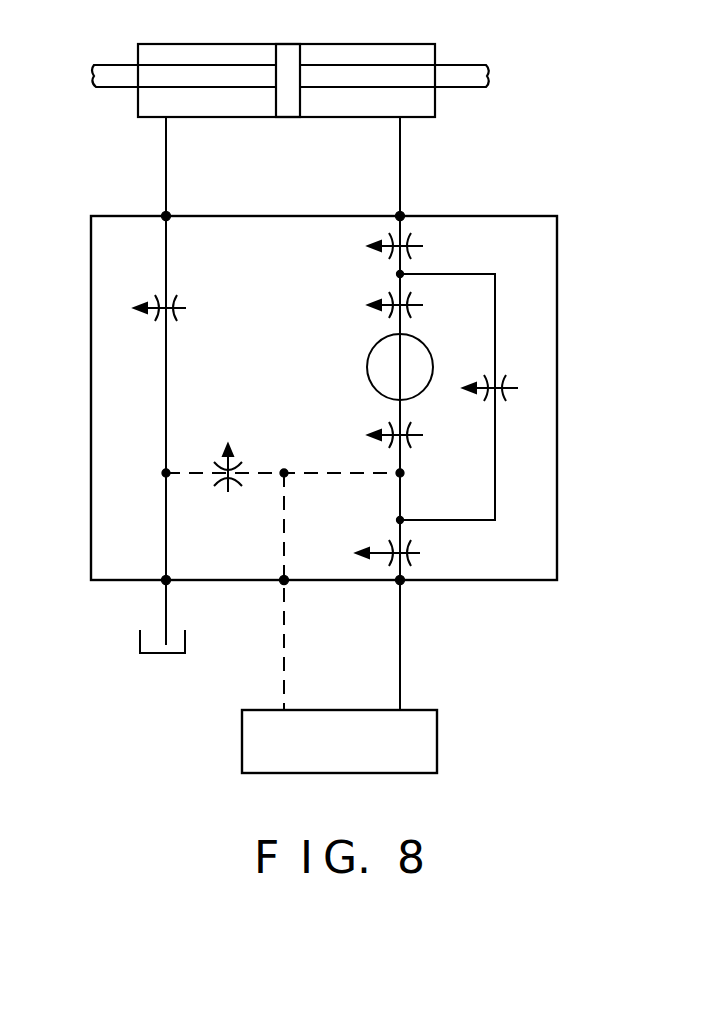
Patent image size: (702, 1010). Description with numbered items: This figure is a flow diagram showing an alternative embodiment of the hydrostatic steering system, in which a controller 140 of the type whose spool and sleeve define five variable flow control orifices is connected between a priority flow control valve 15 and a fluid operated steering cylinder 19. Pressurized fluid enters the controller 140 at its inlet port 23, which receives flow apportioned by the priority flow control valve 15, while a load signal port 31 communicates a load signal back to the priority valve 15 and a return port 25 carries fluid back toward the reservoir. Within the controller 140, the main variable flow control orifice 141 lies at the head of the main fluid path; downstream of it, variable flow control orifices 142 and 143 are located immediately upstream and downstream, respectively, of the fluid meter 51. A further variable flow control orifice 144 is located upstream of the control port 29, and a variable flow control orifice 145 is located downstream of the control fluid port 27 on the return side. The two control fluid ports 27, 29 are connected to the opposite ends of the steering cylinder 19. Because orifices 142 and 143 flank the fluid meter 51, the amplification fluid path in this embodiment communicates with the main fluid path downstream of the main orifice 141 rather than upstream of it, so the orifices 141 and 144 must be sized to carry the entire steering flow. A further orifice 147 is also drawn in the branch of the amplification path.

The steering cylinder 19 is at (178, 44).
The controller 140 is at (78, 252).
The control fluid port 27 is at (168, 214).
The control port 29 is at (402, 214).
The return port 25 is at (168, 583).
The load signal port 31 is at (286, 583).
The inlet port 23 is at (402, 583).
The variable flow control orifice 144 is at (382, 252).
The variable flow control orifice 143 is at (384, 304).
The fluid meter 51 is at (366, 364).
The variable flow control orifice 142 is at (386, 427).
The check valve 147 is at (508, 384).
The main variable flow control orifice 141 is at (384, 544).
The variable flow control orifice 145 is at (176, 296).
The priority flow control valve 15 is at (458, 735).